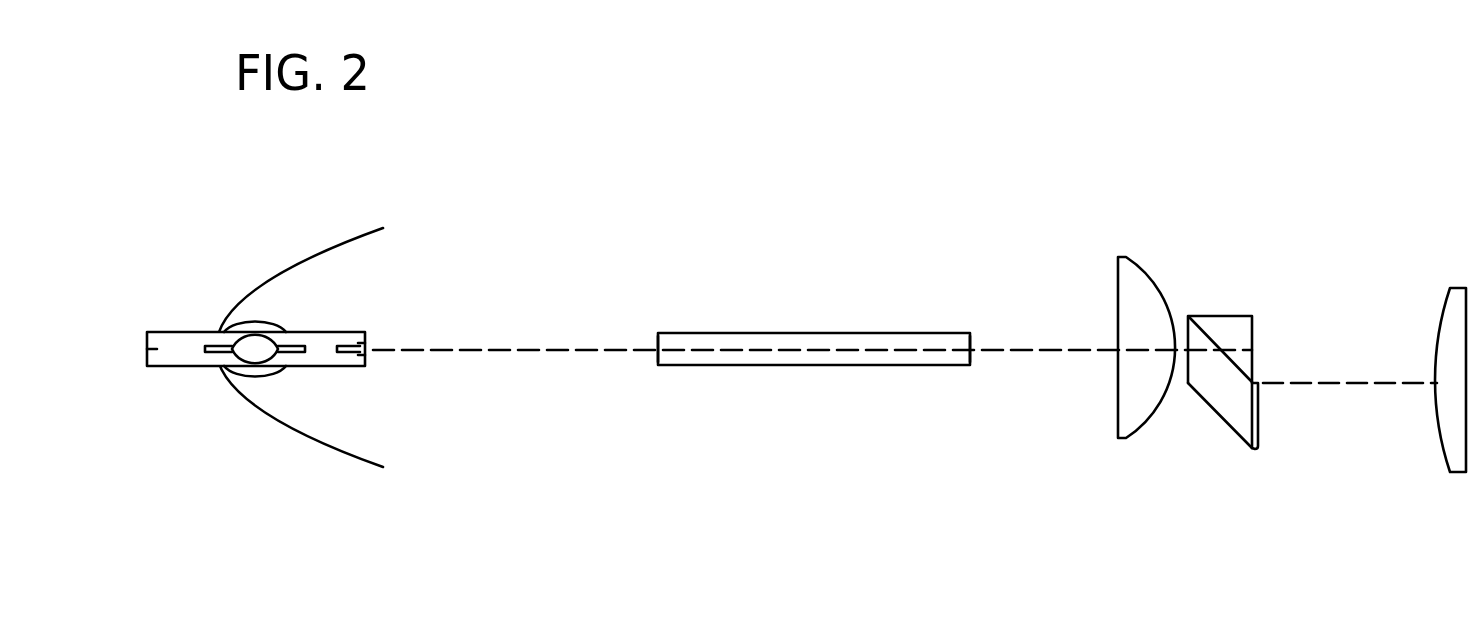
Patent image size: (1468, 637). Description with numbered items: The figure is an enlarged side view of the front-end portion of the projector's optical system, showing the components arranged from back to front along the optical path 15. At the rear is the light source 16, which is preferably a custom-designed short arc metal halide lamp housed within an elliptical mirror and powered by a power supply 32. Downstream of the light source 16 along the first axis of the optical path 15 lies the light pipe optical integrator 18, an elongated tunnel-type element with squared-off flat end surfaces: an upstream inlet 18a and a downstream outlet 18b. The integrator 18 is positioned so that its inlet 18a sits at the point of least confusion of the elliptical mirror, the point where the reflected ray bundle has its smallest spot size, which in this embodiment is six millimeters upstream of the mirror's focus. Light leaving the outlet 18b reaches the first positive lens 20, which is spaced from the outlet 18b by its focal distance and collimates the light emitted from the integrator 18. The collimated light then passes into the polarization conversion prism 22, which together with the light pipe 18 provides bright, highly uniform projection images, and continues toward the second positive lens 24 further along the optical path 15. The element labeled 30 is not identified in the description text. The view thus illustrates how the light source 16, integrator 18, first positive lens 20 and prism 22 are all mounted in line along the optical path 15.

The optical path 15 is at (495, 352).
The light source 16 is at (260, 339).
The light pipe optical integrator 18 is at (823, 398).
The inlet 18a is at (657, 350).
The outlet 18b is at (972, 355).
The first positive lens 20 is at (1115, 430).
The polarization conversion prism 22 is at (1222, 430).
The second positive lens 24 is at (1441, 438).
The arc tube / bulb 30 is at (274, 368).
The power supply 32 is at (283, 260).